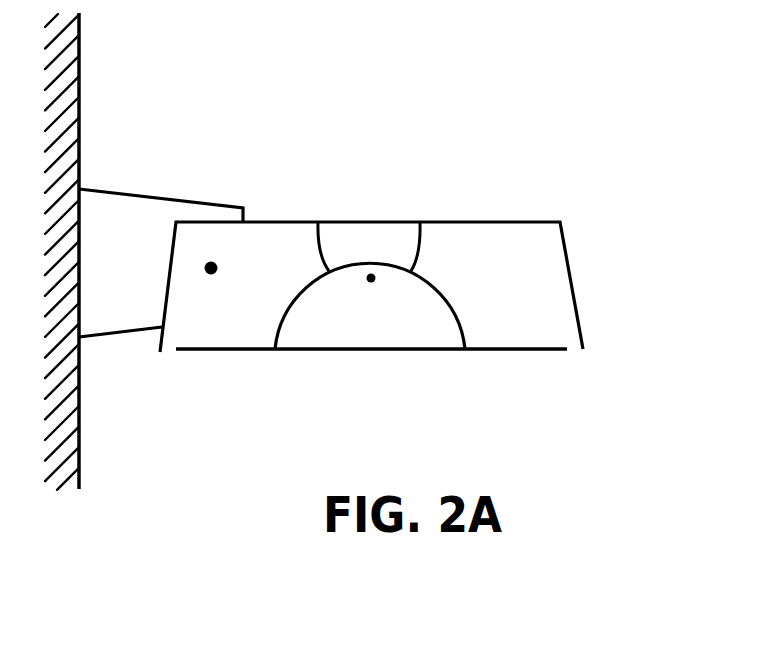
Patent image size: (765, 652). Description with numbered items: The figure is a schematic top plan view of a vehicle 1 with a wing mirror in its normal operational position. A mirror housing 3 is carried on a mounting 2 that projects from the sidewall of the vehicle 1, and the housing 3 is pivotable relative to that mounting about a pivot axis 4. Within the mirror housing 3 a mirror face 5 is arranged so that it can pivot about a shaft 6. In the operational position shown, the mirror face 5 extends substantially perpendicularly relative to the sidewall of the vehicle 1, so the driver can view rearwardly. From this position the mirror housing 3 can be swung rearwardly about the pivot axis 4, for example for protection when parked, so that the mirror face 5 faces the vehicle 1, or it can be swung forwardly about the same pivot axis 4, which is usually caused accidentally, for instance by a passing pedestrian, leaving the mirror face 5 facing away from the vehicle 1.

The vehicle 1 is at (79, 33).
The mounting bracket 2 is at (140, 193).
The mirror housing 3 is at (477, 222).
The pivot axis 4 is at (211, 268).
The mirror face 5 is at (485, 349).
The shaft 6 is at (371, 278).